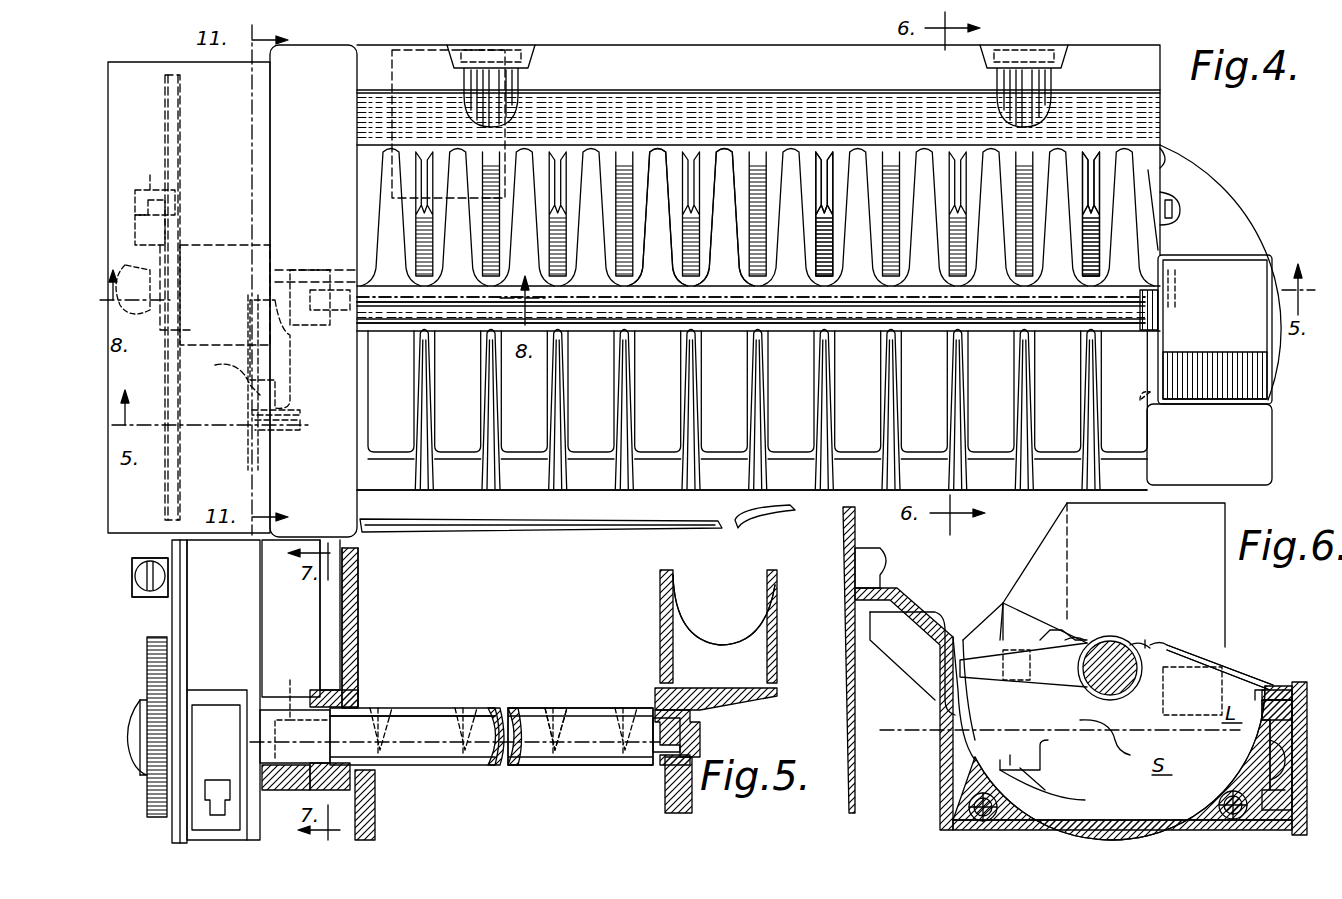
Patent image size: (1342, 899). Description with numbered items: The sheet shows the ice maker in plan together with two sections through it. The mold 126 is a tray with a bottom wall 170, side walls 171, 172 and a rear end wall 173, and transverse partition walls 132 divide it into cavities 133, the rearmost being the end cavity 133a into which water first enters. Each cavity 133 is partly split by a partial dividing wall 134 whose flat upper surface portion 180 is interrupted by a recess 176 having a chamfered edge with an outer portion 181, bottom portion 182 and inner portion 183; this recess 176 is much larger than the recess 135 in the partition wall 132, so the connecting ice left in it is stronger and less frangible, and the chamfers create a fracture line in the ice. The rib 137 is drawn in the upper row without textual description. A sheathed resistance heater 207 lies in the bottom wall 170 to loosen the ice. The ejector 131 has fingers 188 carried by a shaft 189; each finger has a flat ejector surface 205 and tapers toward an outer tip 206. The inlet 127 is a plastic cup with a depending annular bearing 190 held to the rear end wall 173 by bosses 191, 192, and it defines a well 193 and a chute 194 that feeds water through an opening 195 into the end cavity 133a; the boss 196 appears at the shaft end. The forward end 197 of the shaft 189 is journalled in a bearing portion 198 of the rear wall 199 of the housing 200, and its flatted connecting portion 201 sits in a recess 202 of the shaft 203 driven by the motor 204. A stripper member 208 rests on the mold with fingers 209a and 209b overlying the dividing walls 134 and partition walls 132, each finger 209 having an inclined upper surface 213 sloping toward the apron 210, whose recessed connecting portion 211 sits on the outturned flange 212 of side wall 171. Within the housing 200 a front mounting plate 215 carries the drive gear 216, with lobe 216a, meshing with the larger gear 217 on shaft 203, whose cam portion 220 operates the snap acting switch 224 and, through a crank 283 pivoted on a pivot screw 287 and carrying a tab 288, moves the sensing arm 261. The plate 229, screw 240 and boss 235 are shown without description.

In FIG. 4, the mold 126 is at (1162, 145).
In FIG. 4, the inlet 127 is at (1230, 385).
In FIG. 5, the inlet 127 is at (778, 632).
In FIG. 6, the inlet 127 is at (1225, 582).
In FIG. 5, the ejector 131 is at (500, 692).
In FIG. 6, the ejector 131 is at (1066, 636).
In FIG. 4, the partition walls 132 is at (900, 180).
In FIG. 6, the partition walls 132 is at (955, 732).
In FIG. 4, the cavities 133 is at (1140, 170).
In FIG. 6, the cavities 133 is at (1110, 825).
In FIG. 4, the end cavity 133a is at (1160, 150).
In FIG. 4, the partial dividing wall 134 is at (828, 175).
In FIG. 6, the partial dividing wall 134 is at (1285, 762).
In FIG. 4, the recess 135 is at (805, 283).
In FIG. 6, the recess 135 is at (1000, 760).
In FIG. 4, the rib 137 is at (836, 175).
In FIG. 4, the bottom wall 170 is at (357, 203).
In FIG. 6, the bottom wall 170 is at (965, 780).
In FIG. 6, the side wall 171 is at (1290, 738).
In FIG. 6, the side wall 172 is at (950, 758).
In FIG. 5, the rear end wall 173 is at (665, 808).
In FIG. 6, the rear end wall 173 is at (958, 630).
In FIG. 6, the recess 176 is at (1050, 755).
In FIG. 6, the upper surface portion 180 is at (1112, 728).
In FIG. 4, the outer portion 181 is at (1090, 195).
In FIG. 6, the outer portion 181 is at (948, 716).
In FIG. 4, the bottom portion 182 is at (1175, 205).
In FIG. 6, the bottom portion 182 is at (1051, 789).
In FIG. 4, the inner portion 183 is at (1158, 238).
In FIG. 6, the inner portion 183 is at (1050, 780).
In FIG. 4, the fingers 188 is at (723, 160).
In FIG. 6, the fingers 188 is at (1030, 645).
In FIG. 4, the shaft 189 is at (915, 310).
In FIG. 5, the shaft 189 is at (600, 715).
In FIG. 6, the shaft 189 is at (1120, 640).
In FIG. 5, the annular bearing 190 is at (665, 760).
In FIG. 6, the annular bearing 190 is at (1140, 640).
In FIG. 6, the boss 191 is at (1165, 640).
In FIG. 6, the boss 192 is at (1082, 615).
In FIG. 4, the well 193 is at (1240, 278).
In FIG. 5, the well 193 is at (745, 630).
In FIG. 4, the chute 194 is at (1230, 382).
In FIG. 4, the opening 195 is at (1148, 410).
In FIG. 6, the opening 195 is at (1200, 660).
In FIG. 4, the bearing boss 196 is at (1170, 297).
In FIG. 5, the bearing boss 196 is at (690, 735).
In FIG. 5, the forward end 197 is at (355, 715).
In FIG. 5, the bearing portion 198 is at (340, 768).
In FIG. 5, the rear wall 199 is at (360, 580).
In FIG. 4, the housing 200 is at (135, 80).
In FIG. 5, the housing 200 is at (375, 609).
In FIG. 5, the flatted connecting portion 201 is at (292, 680).
In FIG. 5, the recess 202 is at (286, 778).
In FIG. 5, the shaft 203 is at (255, 710).
In FIG. 5, the motor 204 is at (298, 626).
In FIG. 6, the ejector surface 205 is at (985, 655).
In FIG. 5, the outer tip 206 is at (565, 708).
In FIG. 6, the outer tip 206 is at (945, 668).
In FIG. 6, the sheathed resistance heater 207 is at (1302, 755).
In FIG. 4, the stripper member 208 is at (990, 490).
In FIG. 6, the stripper member 208 is at (1258, 665).
In FIG. 6, the lever 209 is at (1170, 640).
In FIG. 4, the stripper fingers 209a is at (960, 420).
In FIG. 6, the stripper fingers 209a is at (1235, 665).
In FIG. 4, the fingers 209b is at (893, 425).
In FIG. 6, the apron 210 is at (1280, 758).
In FIG. 6, the recessed connecting portion 211 is at (1295, 712).
In FIG. 6, the outturned flange 212 is at (1270, 690).
In FIG. 6, the upper surface 213 is at (1225, 650).
In FIG. 4, the front mounting plate 215 is at (182, 135).
In FIG. 4, the drive gear 216 is at (152, 200).
In FIG. 5, the drive gear 216 is at (147, 645).
In FIG. 4, the gear lobe 216a is at (140, 265).
In FIG. 4, the gear 217 is at (176, 205).
In FIG. 5, the gear 217 is at (147, 686).
In FIG. 4, the cam portion 220 is at (228, 245).
In FIG. 5, the snap acting switch 224 is at (240, 762).
In FIG. 5, the mounting plate 229 is at (188, 578).
In FIG. 5, the screw boss 235 is at (135, 597).
In FIG. 5, the screw 240 is at (145, 562).
In FIG. 4, the sensing arm 261 is at (510, 518).
In FIG. 4, the crank 283 is at (245, 430).
In FIG. 4, the pivot screw 287 is at (245, 385).
In FIG. 4, the tab 288 is at (300, 440).